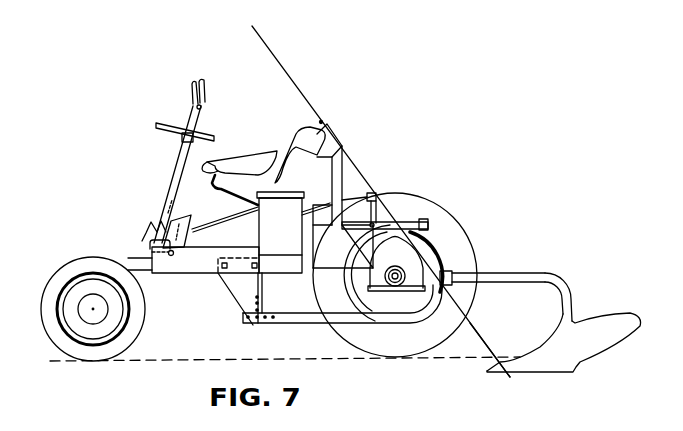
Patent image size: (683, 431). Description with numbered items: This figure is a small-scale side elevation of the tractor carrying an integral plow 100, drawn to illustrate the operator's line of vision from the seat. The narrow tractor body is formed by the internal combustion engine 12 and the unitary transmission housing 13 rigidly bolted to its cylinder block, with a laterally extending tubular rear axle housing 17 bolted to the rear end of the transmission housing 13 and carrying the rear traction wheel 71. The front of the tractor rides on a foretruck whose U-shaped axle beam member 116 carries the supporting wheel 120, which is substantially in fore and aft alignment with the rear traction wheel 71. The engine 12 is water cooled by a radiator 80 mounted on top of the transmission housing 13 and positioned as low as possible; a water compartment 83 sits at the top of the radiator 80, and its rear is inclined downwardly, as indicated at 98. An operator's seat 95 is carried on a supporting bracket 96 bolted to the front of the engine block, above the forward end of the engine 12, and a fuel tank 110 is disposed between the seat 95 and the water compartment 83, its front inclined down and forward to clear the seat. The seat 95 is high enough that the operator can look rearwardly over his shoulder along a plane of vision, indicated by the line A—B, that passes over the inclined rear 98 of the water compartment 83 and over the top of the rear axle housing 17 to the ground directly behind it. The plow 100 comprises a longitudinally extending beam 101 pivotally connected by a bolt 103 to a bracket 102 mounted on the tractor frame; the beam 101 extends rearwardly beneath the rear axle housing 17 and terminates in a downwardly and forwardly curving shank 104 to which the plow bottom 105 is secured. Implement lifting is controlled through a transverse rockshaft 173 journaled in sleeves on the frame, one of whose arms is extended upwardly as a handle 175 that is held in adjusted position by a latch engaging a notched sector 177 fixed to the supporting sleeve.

The internal combustion engine 12 is at (271, 232).
The unitary transmission housing 13 is at (330, 253).
The rear axle housing 17 is at (397, 243).
The rear traction wheel 71 is at (447, 226).
The radiator 80 is at (336, 178).
The water compartment 83 is at (328, 150).
The operator's seat 95 is at (250, 158).
The supporting bracket 96 is at (232, 192).
The inclined rear of water compartment 98 is at (323, 124).
The plow 100 is at (551, 266).
The longitudinally extending beam 101 is at (497, 276).
The bracket 102 is at (235, 283).
The bolt 103 is at (258, 324).
The shank 104 is at (568, 305).
The plow bottom 105 is at (533, 353).
The fuel tank 110 is at (296, 148).
The U-shaped axle beam member 116 is at (143, 270).
The supporting wheel 120 is at (58, 282).
The transverse rockshaft 173 is at (150, 251).
The handle 175 is at (205, 110).
The notched sector 177 is at (155, 220).
The line A—B A is at (377, 191).
The line A— B is at (497, 360).